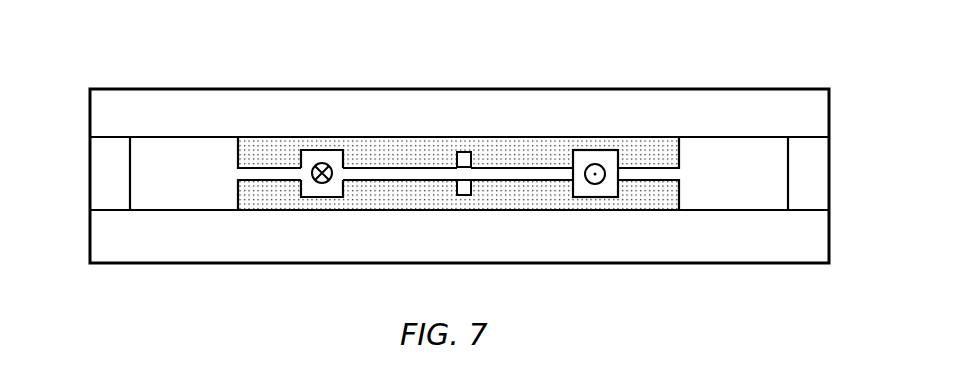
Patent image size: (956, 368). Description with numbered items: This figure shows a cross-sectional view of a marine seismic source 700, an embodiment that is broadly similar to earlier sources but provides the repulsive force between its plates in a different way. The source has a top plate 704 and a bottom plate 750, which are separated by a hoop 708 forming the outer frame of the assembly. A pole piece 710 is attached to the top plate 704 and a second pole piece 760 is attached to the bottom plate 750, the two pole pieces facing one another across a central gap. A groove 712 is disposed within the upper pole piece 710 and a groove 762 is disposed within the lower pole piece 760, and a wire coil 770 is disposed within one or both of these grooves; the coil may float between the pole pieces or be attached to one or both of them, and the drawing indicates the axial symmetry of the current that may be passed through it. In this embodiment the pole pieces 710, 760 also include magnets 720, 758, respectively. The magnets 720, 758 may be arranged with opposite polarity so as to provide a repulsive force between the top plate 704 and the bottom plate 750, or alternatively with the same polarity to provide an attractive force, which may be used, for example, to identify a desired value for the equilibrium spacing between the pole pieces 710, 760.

The marine seismic source 700 is at (653, 36).
The top plate 704 is at (758, 126).
The hoop 708 is at (100, 173).
The pole piece 710 is at (238, 153).
The groove 712 is at (345, 161).
The magnet 720 is at (471, 161).
The bottom plate 750 is at (758, 245).
The magnet 758 is at (471, 193).
The pole piece 760 is at (238, 192).
The groove 762 is at (345, 190).
The wire coil 770 is at (317, 183).